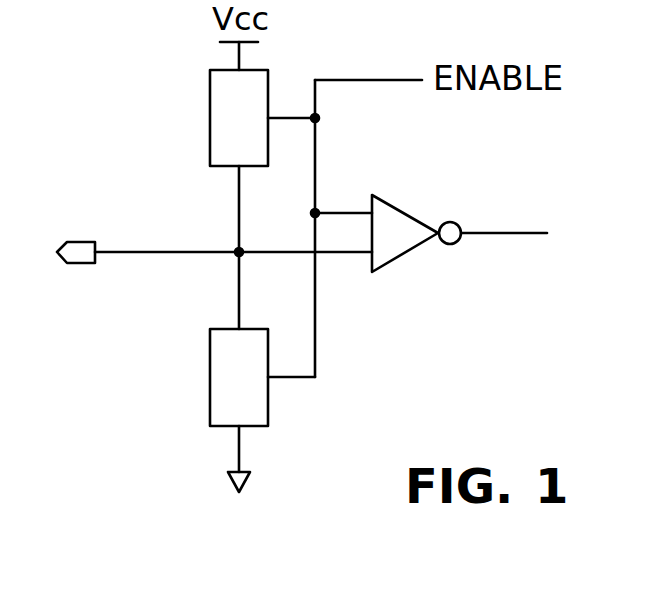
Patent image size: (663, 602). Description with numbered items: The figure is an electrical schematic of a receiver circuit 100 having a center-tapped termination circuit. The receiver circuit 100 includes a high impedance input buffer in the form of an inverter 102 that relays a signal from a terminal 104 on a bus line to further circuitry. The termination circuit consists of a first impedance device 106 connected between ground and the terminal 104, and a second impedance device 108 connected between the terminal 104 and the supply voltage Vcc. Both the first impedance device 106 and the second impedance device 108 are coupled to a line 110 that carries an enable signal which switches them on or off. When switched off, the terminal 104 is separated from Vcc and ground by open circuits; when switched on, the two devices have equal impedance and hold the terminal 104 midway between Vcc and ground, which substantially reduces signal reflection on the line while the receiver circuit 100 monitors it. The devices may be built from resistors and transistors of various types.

The receiver circuit 100 is at (440, 347).
The inverter 102 is at (406, 206).
The terminal 104 is at (76, 241).
The first impedance device 106 is at (210, 377).
The second impedance device 108 is at (210, 118).
The line 110 is at (318, 138).